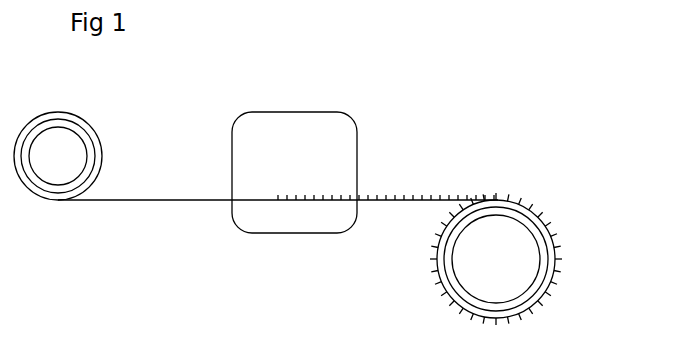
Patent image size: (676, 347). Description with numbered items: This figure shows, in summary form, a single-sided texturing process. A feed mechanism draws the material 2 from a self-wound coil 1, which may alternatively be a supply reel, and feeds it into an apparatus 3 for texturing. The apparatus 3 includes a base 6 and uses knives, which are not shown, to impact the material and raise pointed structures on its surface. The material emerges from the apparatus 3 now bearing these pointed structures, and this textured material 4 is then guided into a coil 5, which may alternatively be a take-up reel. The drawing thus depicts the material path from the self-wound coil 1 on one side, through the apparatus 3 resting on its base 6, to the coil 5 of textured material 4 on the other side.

The self-wound coil 1 is at (47, 112).
The material 2 is at (175, 198).
The apparatus 3 is at (280, 112).
The textured material 4 is at (432, 198).
The coil 5 is at (516, 200).
The base 6 is at (288, 218).